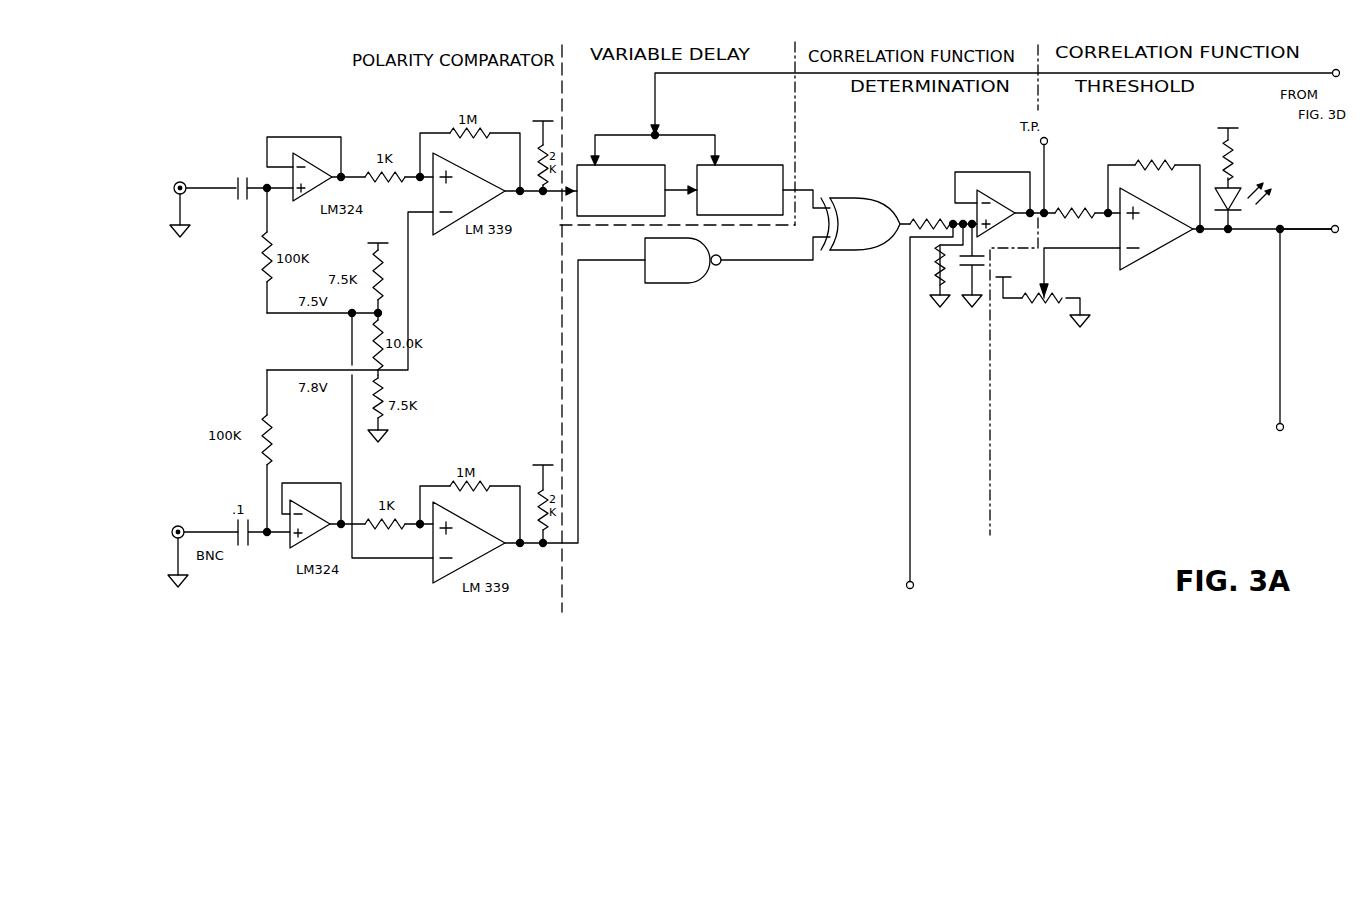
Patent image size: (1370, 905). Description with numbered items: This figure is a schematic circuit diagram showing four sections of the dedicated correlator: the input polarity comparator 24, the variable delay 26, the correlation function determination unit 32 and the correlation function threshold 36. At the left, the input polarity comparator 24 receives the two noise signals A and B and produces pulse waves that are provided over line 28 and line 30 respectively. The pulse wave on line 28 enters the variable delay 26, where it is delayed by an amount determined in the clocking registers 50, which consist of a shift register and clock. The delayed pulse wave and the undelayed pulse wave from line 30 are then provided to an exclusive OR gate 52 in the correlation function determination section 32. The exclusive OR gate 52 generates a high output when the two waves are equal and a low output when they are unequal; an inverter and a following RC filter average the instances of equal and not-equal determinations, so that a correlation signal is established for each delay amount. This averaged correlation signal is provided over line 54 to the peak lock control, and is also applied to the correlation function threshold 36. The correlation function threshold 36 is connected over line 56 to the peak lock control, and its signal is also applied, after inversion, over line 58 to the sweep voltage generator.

The input polarity comparator 24 is at (240, 150).
The variable delay 26 is at (665, 348).
The line 28 is at (561, 185).
The line 30 is at (580, 312).
The correlation function determination unit 32 is at (862, 290).
The correlation function threshold 36 is at (1175, 292).
The clocking registers 50 is at (712, 213).
The exclusive OR gate 52 is at (853, 198).
The line 54 is at (910, 456).
The line 56 is at (1278, 401).
The line 58 is at (1312, 228).